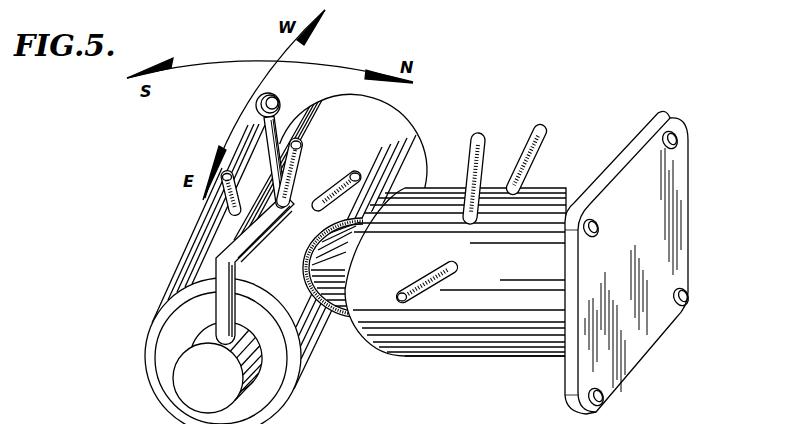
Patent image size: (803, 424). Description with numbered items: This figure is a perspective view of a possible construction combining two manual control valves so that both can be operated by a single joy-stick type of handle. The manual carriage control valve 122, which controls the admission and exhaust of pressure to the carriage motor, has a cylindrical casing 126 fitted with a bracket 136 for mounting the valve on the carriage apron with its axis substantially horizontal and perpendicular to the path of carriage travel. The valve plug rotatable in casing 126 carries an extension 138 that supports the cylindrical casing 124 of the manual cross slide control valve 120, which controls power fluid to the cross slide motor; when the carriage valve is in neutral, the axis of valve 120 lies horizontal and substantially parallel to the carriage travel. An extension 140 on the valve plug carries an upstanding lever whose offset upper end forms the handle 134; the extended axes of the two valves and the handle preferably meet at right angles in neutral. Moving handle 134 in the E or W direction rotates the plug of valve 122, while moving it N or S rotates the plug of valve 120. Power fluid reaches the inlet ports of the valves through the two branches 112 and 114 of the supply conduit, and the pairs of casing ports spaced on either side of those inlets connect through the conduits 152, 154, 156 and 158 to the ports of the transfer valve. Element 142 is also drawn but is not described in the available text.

The branch conduit 112 is at (302, 164).
The branch conduit 114 is at (481, 160).
The manual cross slide control valve 120 is at (170, 278).
The manual carriage control valve 122 is at (488, 362).
The cylindrical casing 124 is at (212, 240).
The cylindrical casing 126 is at (448, 354).
The handle 134 is at (270, 124).
The bracket 136 is at (633, 363).
The extension 138 is at (333, 264).
The extension 140 is at (204, 340).
The bent conductor rod 142 is at (221, 300).
The conduit 152 is at (328, 196).
The conduit 154 is at (238, 192).
The conduit 156 is at (536, 160).
The conduit 158 is at (427, 283).